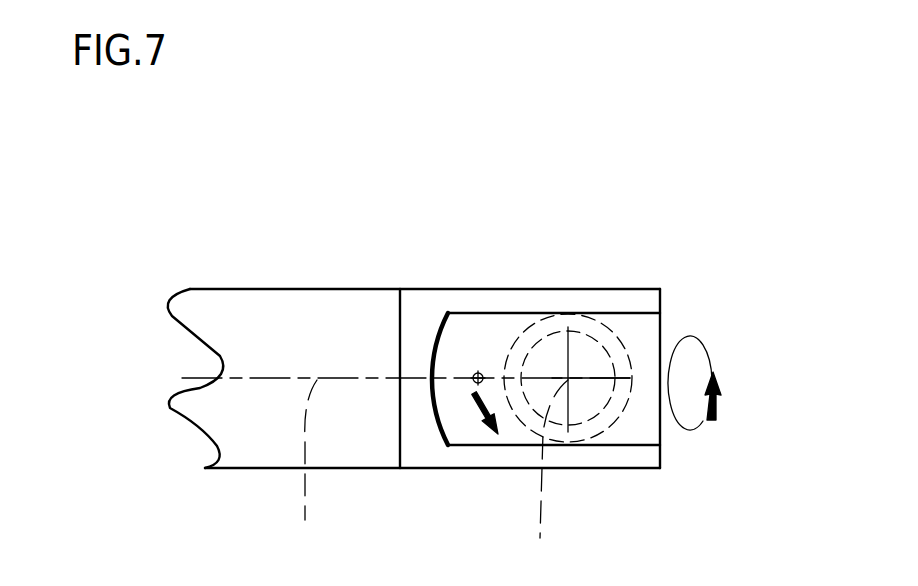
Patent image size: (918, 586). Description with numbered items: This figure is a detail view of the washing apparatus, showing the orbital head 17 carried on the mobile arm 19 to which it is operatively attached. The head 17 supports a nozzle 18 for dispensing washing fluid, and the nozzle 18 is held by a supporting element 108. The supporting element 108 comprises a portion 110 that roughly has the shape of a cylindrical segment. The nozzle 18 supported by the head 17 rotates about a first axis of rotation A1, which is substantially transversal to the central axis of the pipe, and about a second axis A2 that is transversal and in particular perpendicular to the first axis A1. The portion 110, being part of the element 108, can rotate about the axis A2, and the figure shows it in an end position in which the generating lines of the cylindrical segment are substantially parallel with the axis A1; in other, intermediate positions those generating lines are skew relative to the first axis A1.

The mobile arm 19 is at (272, 284).
The orbital head 17 is at (492, 284).
The nozzle 18 is at (474, 369).
The supporting element 108 is at (505, 325).
The portion 110 is at (454, 420).
The first axis of rotation A1 is at (309, 473).
The second axis A2 is at (545, 479).